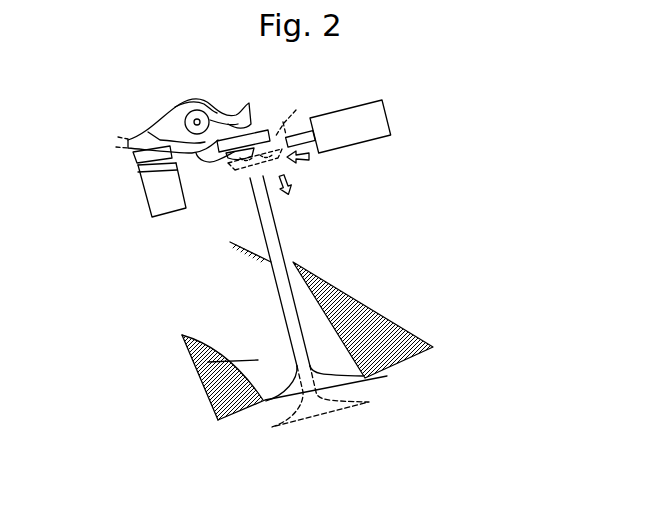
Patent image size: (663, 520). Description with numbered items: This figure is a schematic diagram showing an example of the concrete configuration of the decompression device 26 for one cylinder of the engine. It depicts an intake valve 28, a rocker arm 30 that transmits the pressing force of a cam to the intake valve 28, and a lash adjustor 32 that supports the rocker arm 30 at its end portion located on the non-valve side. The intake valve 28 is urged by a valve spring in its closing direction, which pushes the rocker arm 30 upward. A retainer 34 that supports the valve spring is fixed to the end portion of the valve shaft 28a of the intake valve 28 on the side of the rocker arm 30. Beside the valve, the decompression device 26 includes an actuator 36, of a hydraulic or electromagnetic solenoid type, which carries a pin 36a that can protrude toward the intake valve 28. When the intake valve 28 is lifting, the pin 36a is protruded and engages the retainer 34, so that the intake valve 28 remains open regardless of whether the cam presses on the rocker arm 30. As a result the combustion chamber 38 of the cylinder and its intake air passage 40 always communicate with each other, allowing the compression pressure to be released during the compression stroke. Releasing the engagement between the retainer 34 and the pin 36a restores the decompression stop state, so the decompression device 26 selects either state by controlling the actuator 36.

The decompression device 26 is at (424, 88).
The intake valve 28 is at (293, 240).
The valve shaft 28a is at (288, 326).
The rocker arm 30 is at (228, 113).
The lash adjustor 32 is at (152, 197).
The retainer 34 is at (228, 153).
The actuator 36 is at (404, 125).
The pin 36a is at (297, 131).
The combustion chamber 38 is at (390, 402).
The intake air passage 40 is at (209, 372).